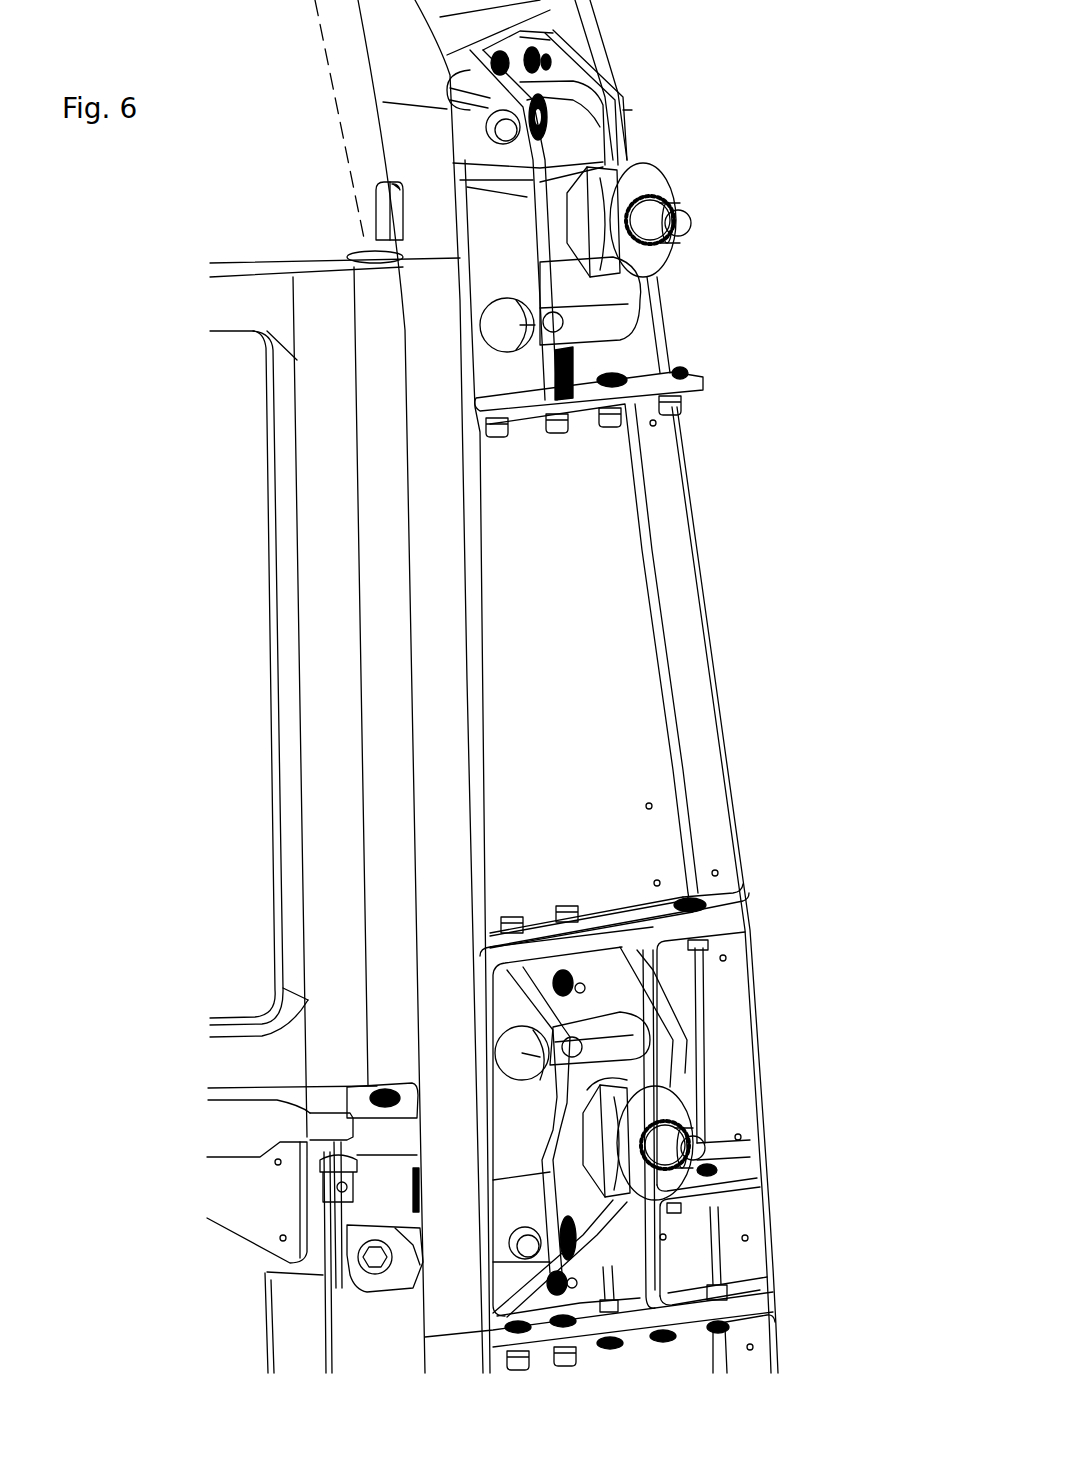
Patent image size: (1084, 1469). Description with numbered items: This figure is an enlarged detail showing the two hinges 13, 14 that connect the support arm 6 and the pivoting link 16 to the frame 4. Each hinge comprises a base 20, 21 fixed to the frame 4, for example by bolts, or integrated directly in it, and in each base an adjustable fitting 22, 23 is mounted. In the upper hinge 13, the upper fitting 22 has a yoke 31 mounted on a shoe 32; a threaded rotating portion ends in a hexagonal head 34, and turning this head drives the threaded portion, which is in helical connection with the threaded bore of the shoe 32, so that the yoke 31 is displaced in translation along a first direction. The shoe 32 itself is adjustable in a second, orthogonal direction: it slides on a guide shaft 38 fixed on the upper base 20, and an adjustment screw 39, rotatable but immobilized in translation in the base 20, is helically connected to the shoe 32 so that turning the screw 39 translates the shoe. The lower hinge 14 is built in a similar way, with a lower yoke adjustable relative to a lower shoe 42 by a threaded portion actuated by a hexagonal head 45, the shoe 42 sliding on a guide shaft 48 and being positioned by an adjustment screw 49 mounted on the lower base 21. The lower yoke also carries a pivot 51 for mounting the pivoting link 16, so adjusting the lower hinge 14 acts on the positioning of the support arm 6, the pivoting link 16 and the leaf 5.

The frame 4 is at (570, 660).
The leaf 5 is at (312, 178).
The support arm 6 is at (305, 268).
The upper hinge 13 is at (664, 134).
The lower hinge 14 is at (738, 1120).
The pivoting link 16 is at (232, 1148).
The upper base 20 is at (637, 343).
The lower base 21 is at (527, 1127).
The upper fitting 22 is at (682, 227).
The lower fitting 23 is at (698, 1148).
The yoke 31 is at (389, 222).
The shoe 32 is at (600, 295).
The hexagonal head 34 is at (640, 267).
The guide shaft 38 is at (505, 130).
The adjustment screw 39 is at (488, 316).
The lower shoe 42 is at (598, 1030).
The hexagonal head 45 is at (683, 1113).
The guide shaft 48 is at (517, 1250).
The adjustment screw 49 is at (502, 1058).
The pivot 51 is at (328, 1200).